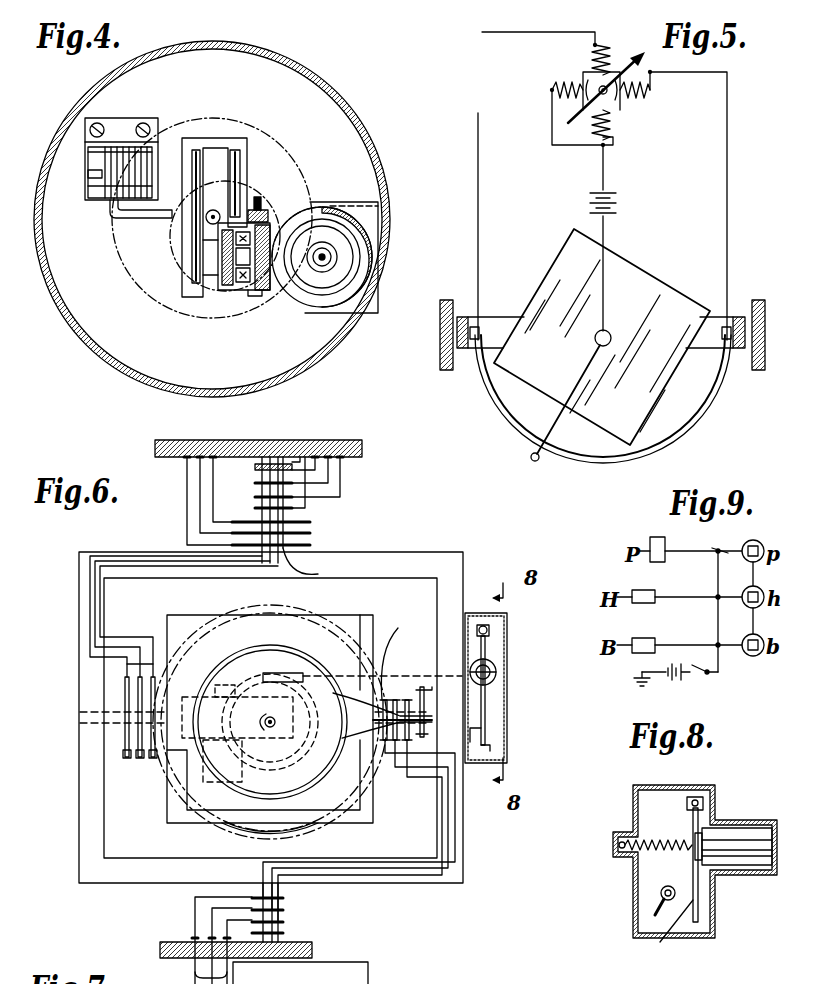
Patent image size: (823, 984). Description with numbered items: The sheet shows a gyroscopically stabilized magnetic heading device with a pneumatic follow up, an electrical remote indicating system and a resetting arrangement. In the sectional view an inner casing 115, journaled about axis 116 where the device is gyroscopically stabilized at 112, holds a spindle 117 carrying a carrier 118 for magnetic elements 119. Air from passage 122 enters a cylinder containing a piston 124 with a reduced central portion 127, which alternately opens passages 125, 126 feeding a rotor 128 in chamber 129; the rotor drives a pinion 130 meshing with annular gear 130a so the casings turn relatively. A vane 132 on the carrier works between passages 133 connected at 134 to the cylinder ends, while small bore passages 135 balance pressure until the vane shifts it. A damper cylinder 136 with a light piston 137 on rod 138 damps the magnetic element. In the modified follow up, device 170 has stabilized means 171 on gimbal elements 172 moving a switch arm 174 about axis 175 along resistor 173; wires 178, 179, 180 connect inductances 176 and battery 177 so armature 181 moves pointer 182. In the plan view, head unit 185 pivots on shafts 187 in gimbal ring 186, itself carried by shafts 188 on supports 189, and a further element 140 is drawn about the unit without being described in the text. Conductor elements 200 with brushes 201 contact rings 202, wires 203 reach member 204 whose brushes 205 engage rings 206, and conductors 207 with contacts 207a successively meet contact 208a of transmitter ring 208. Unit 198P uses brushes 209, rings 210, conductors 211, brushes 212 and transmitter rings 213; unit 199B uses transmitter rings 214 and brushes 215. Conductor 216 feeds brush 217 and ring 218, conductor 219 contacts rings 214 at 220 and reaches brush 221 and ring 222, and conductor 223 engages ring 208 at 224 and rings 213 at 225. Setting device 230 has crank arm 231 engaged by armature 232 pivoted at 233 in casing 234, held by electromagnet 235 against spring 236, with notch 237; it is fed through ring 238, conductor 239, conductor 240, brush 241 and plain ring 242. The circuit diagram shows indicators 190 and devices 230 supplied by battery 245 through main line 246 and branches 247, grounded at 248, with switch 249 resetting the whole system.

In FIG. 4, the inner casing 115 is at (333, 84).
In FIG. 4, the spindle 117 is at (213, 210).
In FIG. 4, the carrier 118 is at (240, 145).
In FIG. 4, the magnetic elements 119 is at (233, 150).
In FIG. 4, the passage 122 is at (200, 292).
In FIG. 4, the piston 124 is at (247, 292).
In FIG. 4, the passage 125 is at (262, 225).
In FIG. 4, the passage 126 is at (258, 292).
In FIG. 4, the central passage portion 127 is at (232, 262).
In FIG. 4, the rotor or turbine wheel 128 is at (300, 286).
In FIG. 4, the chamber 129 is at (318, 206).
In FIG. 4, the pinion 130 is at (335, 285).
In FIG. 4, the annular gear 130a is at (122, 262).
In FIG. 4, the vane or valve 132 is at (256, 196).
In FIG. 4, the passages 133 is at (260, 210).
In FIG. 4, the connections 134 is at (222, 238).
In FIG. 4, the small bore passages 135 is at (222, 250).
In FIG. 4, the cylinder 136 is at (92, 194).
In FIG. 4, the piston or plate 137 is at (90, 178).
In FIG. 4, the rod 138 is at (126, 218).
In FIG. 5, the device 170 is at (735, 238).
In FIG. 5, the gyroscopically stabilized means 171 is at (660, 280).
In FIG. 5, the gimbal elements 172 is at (497, 320).
In FIG. 5, the resistor element 173 is at (710, 414).
In FIG. 5, the switch arm 174 is at (548, 437).
In FIG. 5, the axis 175 is at (609, 331).
In FIG. 5, the inductance coils 176 is at (600, 44).
In FIG. 5, the battery 177 is at (616, 206).
In FIG. 5, the wire 178 is at (479, 215).
In FIG. 5, the wire 179 is at (727, 172).
In FIG. 5, the wires 180 is at (552, 112).
In FIG. 5, the rotatable armature or magnet 181 is at (625, 100).
In FIG. 5, the indicator or pointer 182 is at (624, 60).
In FIG. 6, the gyroscopic stabilization 112 is at (250, 608).
In FIG. 6, the axis 116 is at (265, 722).
In FIG. 6, the ring 140 is at (226, 607).
In FIG. 6, the head indicating unit 185 is at (352, 616).
In FIG. 6, the gimbal ring 186 is at (88, 801).
In FIG. 6, the shafts 187 is at (108, 723).
In FIG. 8, the shafts 187 is at (666, 888).
In FIG. 6, the shafts 188 is at (262, 458).
In FIG. 6, the supports 189 is at (355, 441).
In FIG. 6, the conductor unit 198P is at (315, 425).
In FIG. 6, the conductor unit 199B is at (187, 425).
In FIG. 6, the conductor elements 200 is at (212, 916).
In FIG. 6, the brushes 201 is at (250, 900).
In FIG. 6, the conductor rings 202 is at (284, 911).
In FIG. 6, the wires 203 is at (458, 868).
In FIG. 6, the member 204 is at (408, 766).
In FIG. 6, the brushes 205 is at (394, 745).
In FIG. 6, the conductor rings 206 is at (406, 700).
In FIG. 6, the conductors 207 is at (396, 651).
In FIG. 6, the contacts 207a is at (338, 612).
In FIG. 6, the ring transmitter member 208 is at (300, 792).
In FIG. 6, the contact 208a is at (273, 717).
In FIG. 6, the brushes 209 is at (330, 486).
In FIG. 6, the rings 210 is at (255, 508).
In FIG. 6, the conductors 211 is at (98, 590).
In FIG. 6, the brushes 212 is at (110, 665).
In FIG. 6, the transmitter rings 213 is at (138, 691).
In FIG. 6, the transmitter rings 214 is at (310, 534).
In FIG. 6, the brushes or conductors 215 is at (232, 545).
In FIG. 6, the conductor 216 is at (305, 437).
In FIG. 6, the brush 217 is at (300, 452).
In FIG. 6, the conductor ring 218 is at (255, 468).
In FIG. 6, the conductor 219 is at (338, 500).
In FIG. 6, the contact 220 is at (309, 566).
In FIG. 6, the brush or conductor 221 is at (423, 686).
In FIG. 6, the ring 222 is at (440, 716).
In FIG. 6, the conductor 223 is at (395, 723).
In FIG. 6, the sliding contact 224 is at (342, 740).
In FIG. 6, the sliding contact 225 is at (140, 760).
In FIG. 6, the setting device 230 is at (188, 690).
In FIG. 9, the setting device 230 is at (654, 541).
In FIG. 8, the setting device 230 is at (625, 808).
In FIG. 6, the crank arm 231 is at (483, 753).
In FIG. 8, the crank arm 231 is at (660, 894).
In FIG. 6, the arm or armature 232 is at (487, 741).
In FIG. 8, the arm or armature 232 is at (698, 918).
In FIG. 6, the pivot 233 is at (483, 624).
In FIG. 8, the pivot 233 is at (703, 803).
In FIG. 6, the casing 234 is at (478, 735).
In FIG. 8, the casing 234 is at (633, 871).
In FIG. 6, the electromagnet 235 is at (497, 672).
In FIG. 8, the electromagnet 235 is at (745, 853).
In FIG. 8, the tension spring 236 is at (660, 842).
In FIG. 8, the guide or notch 237 is at (671, 930).
In FIG. 6, the ring 238 is at (284, 932).
In FIG. 6, the conductor 239 is at (372, 884).
In FIG. 6, the conductor 240 is at (390, 669).
In FIG. 6, the brush 241 is at (283, 673).
In FIG. 6, the plain contact ring 242 is at (252, 690).
In FIG. 9, the remote controlled indicators 190 is at (759, 546).
In FIG. 9, the battery or source of current 245 is at (670, 680).
In FIG. 9, the main line 246 is at (716, 626).
In FIG. 9, the branches 247 is at (714, 550).
In FIG. 9, the ground 248 is at (635, 679).
In FIG. 9, the switch 249 is at (706, 677).